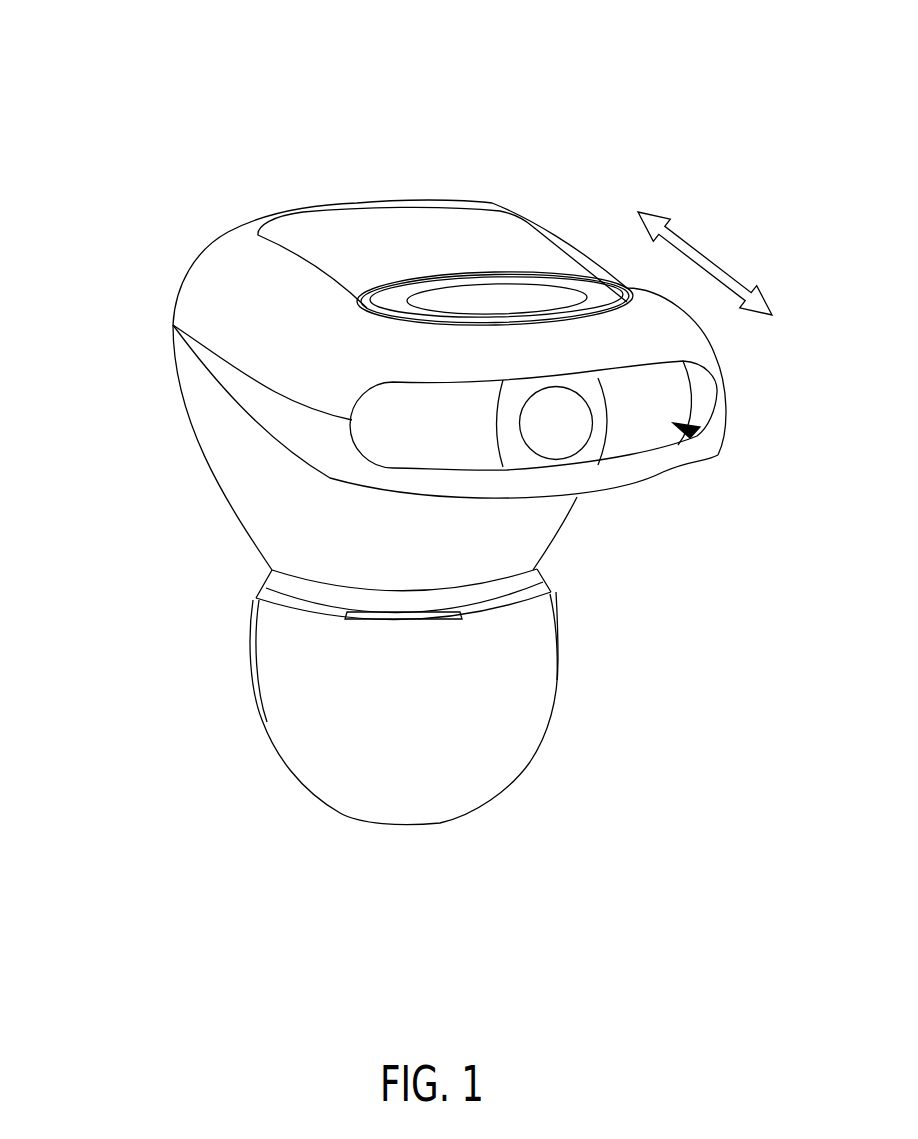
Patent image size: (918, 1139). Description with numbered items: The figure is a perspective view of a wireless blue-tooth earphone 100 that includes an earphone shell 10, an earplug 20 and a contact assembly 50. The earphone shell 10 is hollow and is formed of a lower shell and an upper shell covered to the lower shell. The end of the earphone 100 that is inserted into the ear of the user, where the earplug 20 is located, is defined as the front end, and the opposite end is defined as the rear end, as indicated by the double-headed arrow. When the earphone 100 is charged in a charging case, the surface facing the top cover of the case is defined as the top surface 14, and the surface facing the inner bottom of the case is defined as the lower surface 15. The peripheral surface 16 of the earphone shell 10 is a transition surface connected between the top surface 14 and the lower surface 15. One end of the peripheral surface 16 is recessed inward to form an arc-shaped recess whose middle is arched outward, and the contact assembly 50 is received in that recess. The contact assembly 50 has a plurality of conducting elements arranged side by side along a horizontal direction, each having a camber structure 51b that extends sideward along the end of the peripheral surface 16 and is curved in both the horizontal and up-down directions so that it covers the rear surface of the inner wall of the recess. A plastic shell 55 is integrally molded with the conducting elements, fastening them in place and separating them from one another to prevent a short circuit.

The wireless blue-tooth earphone 100 is at (100, 33).
The earphone shell 10 is at (232, 240).
The top surface 14 is at (388, 212).
The peripheral surface 16 is at (200, 295).
The lower surface 15 is at (325, 460).
The earplug 20 is at (283, 723).
The contact assembly 50 is at (700, 433).
The camber structure 51b is at (633, 447).
The plastic shell 55 is at (600, 447).